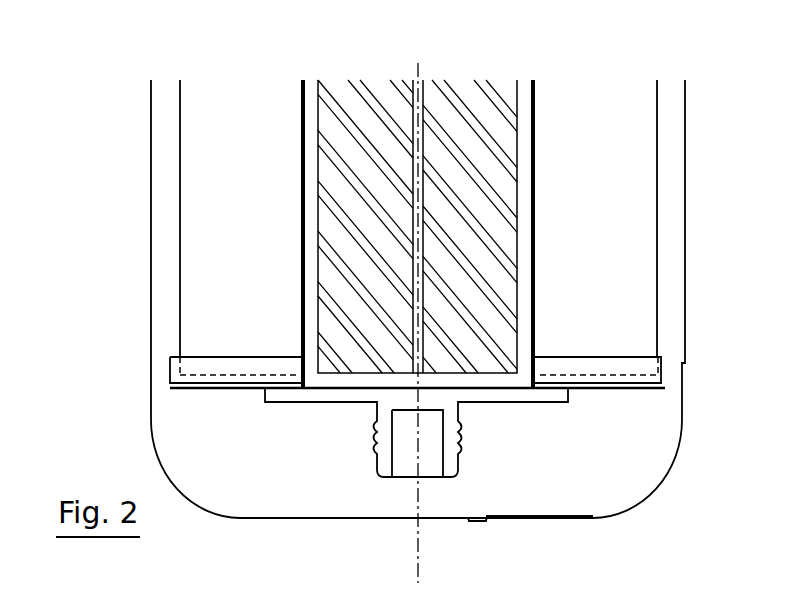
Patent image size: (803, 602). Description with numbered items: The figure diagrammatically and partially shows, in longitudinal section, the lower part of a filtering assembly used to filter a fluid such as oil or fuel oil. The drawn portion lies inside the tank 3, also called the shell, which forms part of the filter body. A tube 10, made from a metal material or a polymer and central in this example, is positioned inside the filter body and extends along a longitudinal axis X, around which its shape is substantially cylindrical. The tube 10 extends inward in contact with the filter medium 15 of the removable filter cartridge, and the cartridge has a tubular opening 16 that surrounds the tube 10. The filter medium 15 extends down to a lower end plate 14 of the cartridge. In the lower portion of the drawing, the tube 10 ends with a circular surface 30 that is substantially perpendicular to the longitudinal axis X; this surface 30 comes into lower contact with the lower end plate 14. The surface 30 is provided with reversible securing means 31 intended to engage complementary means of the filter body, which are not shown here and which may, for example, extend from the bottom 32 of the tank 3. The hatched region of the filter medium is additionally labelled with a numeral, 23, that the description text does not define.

The tank 3 is at (157, 214).
The tube 10 is at (527, 164).
The lower end plate 14 is at (181, 372).
The filter medium 15 is at (598, 196).
The tubular opening 16 is at (535, 281).
The filter material 23 is at (355, 105).
The circular surface 30 is at (553, 395).
The reversible securing means 31 is at (450, 457).
The bottom 32 is at (270, 518).
The longitudinal axis X is at (418, 562).